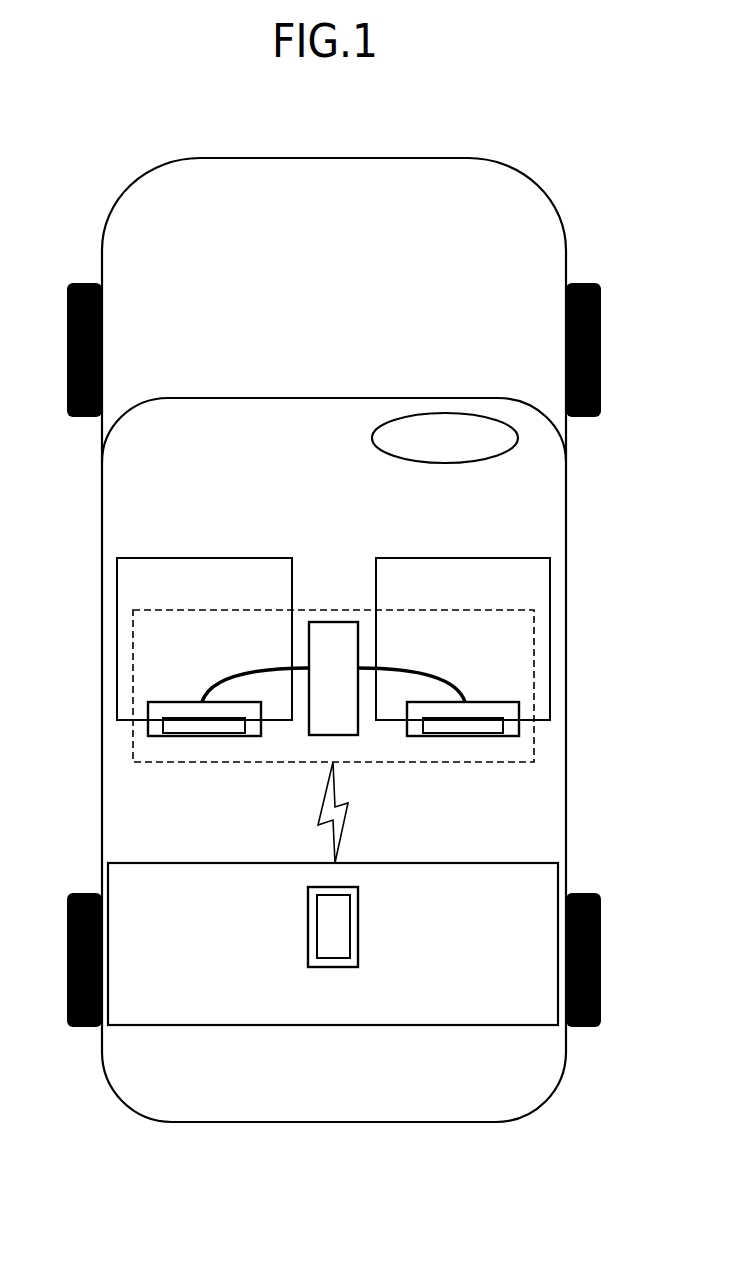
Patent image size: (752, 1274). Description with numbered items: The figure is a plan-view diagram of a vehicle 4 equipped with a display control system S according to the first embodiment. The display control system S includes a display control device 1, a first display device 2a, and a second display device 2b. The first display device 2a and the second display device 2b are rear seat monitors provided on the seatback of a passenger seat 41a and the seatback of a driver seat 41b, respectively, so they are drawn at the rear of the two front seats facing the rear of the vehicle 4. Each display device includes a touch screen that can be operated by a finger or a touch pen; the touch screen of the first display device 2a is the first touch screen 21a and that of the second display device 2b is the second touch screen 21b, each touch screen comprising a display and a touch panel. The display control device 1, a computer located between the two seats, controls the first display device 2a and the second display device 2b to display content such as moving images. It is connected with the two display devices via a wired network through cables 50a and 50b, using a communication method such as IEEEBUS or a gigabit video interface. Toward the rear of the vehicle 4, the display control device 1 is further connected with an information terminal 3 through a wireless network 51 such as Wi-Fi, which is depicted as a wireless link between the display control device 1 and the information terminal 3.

The vehicle 4 is at (420, 158).
The display control system S is at (453, 610).
The display control device 1 is at (358, 630).
The cable 50a is at (237, 676).
The cable 50b is at (433, 680).
The passenger seat 41a is at (117, 694).
The driver seat 41b is at (550, 695).
The first display device 2a is at (148, 722).
The second display device 2b is at (519, 722).
The first touch screen 21a is at (203, 736).
The second touch screen 21b is at (463, 735).
The wireless network 51 is at (318, 812).
The information terminal 3 is at (343, 927).